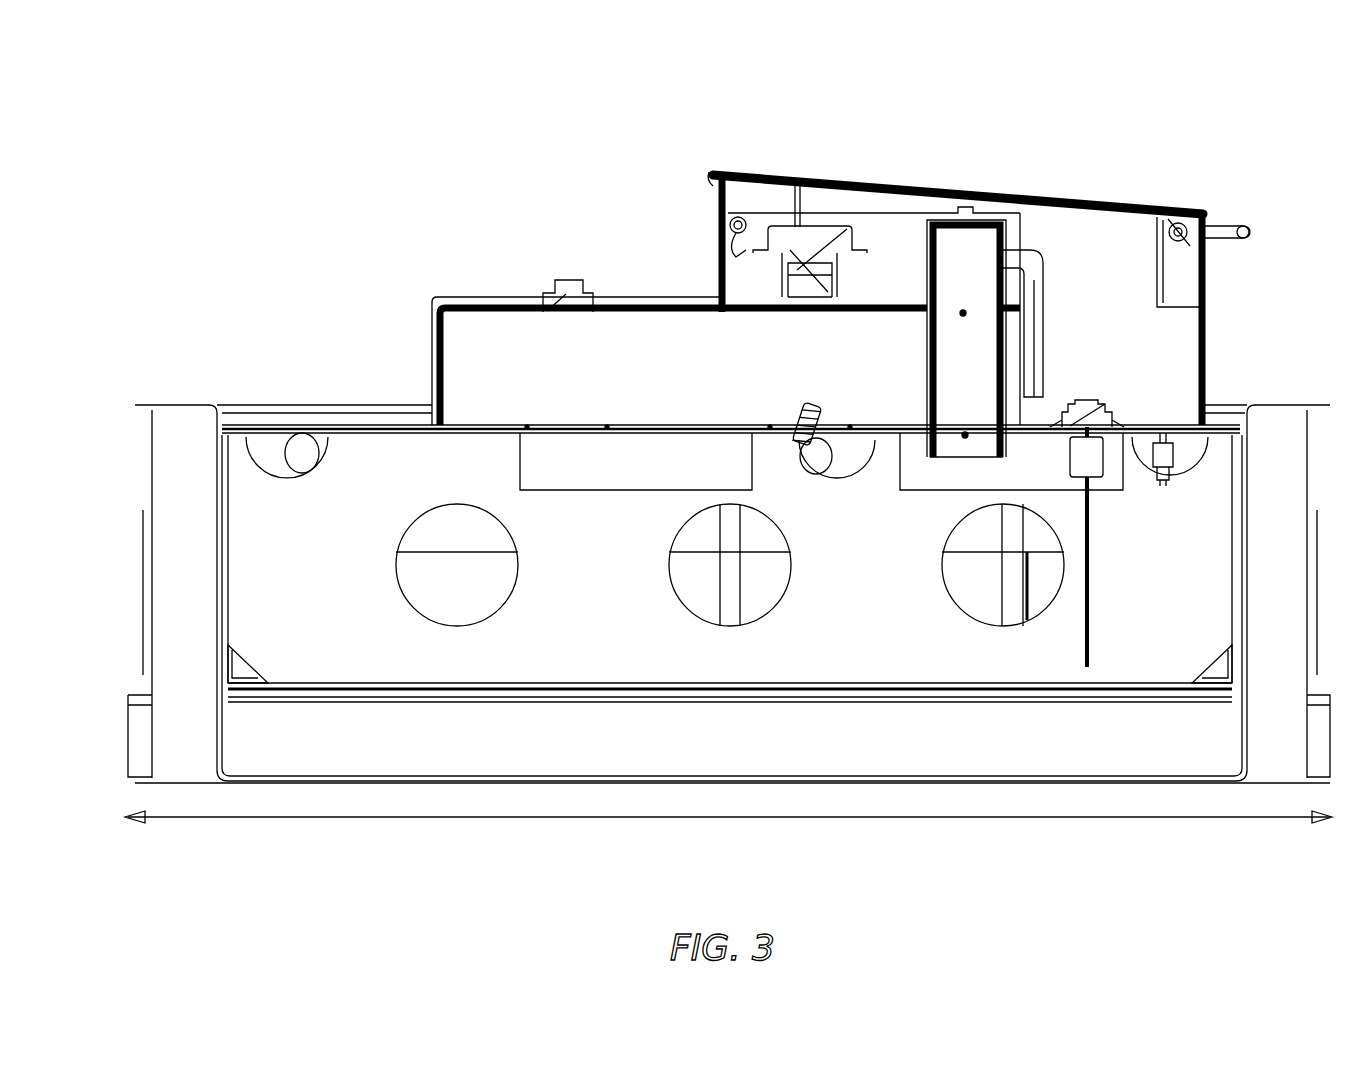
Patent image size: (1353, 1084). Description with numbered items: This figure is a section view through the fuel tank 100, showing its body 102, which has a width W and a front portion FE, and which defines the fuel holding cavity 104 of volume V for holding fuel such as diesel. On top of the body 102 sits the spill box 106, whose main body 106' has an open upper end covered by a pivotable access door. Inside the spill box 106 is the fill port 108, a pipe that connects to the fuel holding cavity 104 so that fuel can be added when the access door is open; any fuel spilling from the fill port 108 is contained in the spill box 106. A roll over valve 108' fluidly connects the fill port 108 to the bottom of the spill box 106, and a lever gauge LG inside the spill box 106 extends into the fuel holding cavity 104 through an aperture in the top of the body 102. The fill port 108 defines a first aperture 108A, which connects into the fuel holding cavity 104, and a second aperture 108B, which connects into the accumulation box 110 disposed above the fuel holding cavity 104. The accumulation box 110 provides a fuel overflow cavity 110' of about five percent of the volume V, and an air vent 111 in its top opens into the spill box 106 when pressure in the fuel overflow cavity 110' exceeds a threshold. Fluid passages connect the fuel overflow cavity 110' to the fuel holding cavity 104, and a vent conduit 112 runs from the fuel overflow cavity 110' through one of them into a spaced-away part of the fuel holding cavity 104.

The fuel tank 100 is at (170, 86).
The body 102 is at (200, 587).
The fuel holding cavity 104 is at (893, 580).
The spill box 106 is at (962, 298).
The main body 106' is at (1248, 285).
The fill port 108 is at (966, 338).
The roll over valve 108' is at (1070, 320).
The first aperture 108A is at (965, 435).
The second aperture 108B is at (963, 313).
The accumulation box 110 is at (726, 321).
The fuel overflow cavity 110' is at (720, 362).
The air vent 111 is at (818, 223).
The vent conduit 112 is at (804, 412).
The front portion FE is at (335, 387).
The lever gauge LG is at (1113, 403).
The volume V is at (604, 577).
The width W is at (867, 820).